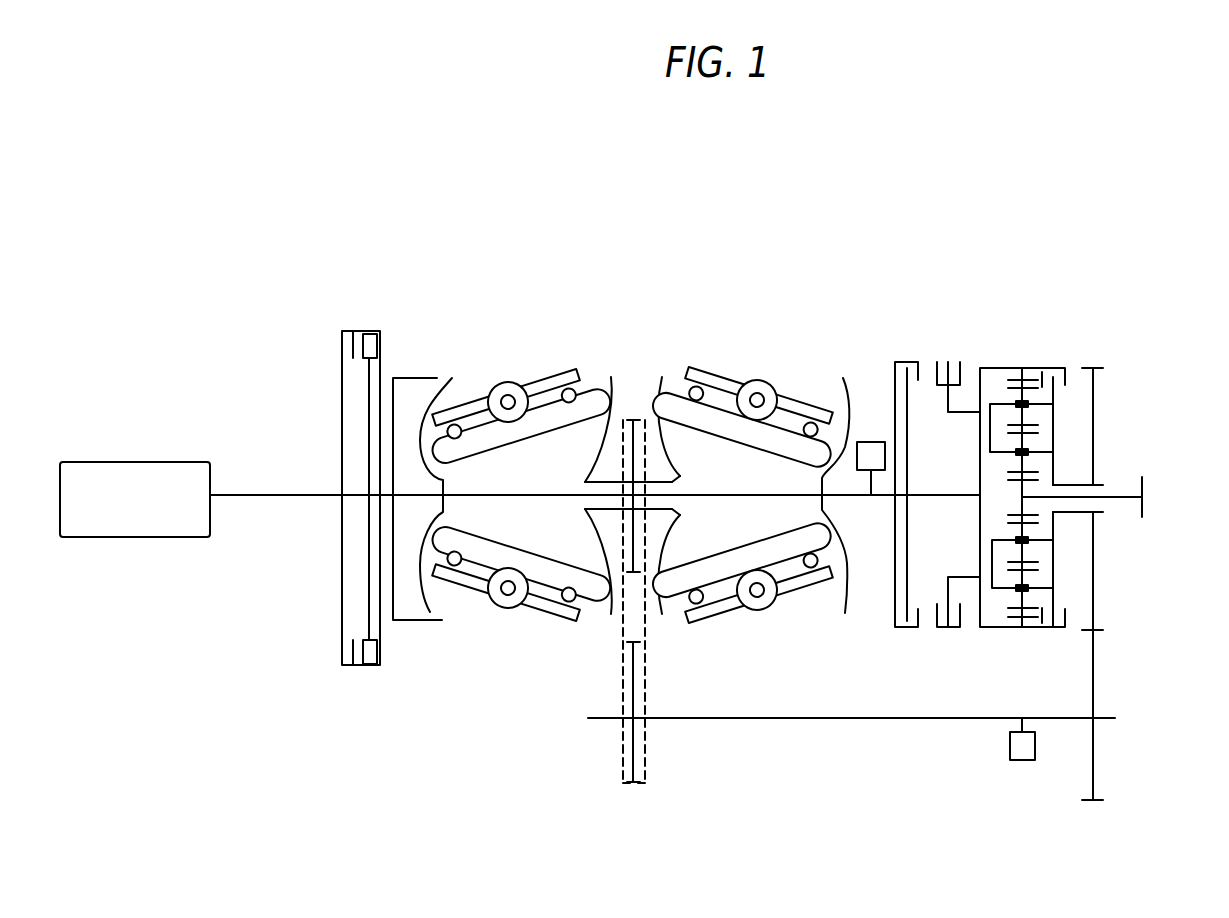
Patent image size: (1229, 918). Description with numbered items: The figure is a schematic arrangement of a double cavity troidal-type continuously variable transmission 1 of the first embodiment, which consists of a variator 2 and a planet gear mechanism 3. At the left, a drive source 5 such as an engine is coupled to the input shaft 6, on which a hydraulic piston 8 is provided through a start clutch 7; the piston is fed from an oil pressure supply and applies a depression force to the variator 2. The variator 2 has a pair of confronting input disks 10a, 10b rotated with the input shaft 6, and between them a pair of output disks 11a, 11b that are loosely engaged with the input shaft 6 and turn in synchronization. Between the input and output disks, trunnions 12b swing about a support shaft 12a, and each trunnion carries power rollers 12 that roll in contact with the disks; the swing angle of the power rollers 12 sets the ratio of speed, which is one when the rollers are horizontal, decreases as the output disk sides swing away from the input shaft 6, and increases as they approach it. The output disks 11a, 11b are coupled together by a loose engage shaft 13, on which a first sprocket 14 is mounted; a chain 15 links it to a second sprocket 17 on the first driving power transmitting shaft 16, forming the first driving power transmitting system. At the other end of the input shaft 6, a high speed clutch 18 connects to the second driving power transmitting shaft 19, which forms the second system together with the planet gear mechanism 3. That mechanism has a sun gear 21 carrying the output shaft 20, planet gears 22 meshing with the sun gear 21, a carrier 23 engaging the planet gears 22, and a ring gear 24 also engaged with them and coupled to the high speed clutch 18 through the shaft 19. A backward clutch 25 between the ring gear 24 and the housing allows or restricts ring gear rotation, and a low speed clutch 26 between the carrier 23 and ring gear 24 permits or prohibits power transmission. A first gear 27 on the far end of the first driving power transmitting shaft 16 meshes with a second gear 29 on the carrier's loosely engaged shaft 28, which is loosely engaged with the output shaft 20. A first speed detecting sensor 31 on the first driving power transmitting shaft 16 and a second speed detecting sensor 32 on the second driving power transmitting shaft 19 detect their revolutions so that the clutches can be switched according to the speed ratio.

The troidal-type continuously variable transmission 1 is at (690, 292).
The variator 2 is at (702, 372).
The planet gear mechanism 3 is at (1046, 350).
The drive source 5 is at (138, 538).
The input shaft 6 is at (268, 496).
The start clutch 7 is at (342, 583).
The hydraulic piston 8 is at (413, 620).
The input disk 10a is at (452, 378).
The input disk 10b is at (842, 580).
The output disk 11a is at (611, 377).
The output disk 11b is at (677, 512).
The power roller 12 is at (784, 412).
The support shaft 12a is at (508, 402).
The trunnion 12b is at (550, 377).
The loose engage shaft 13 is at (681, 478).
The first sprocket 14 is at (642, 422).
The chain 15 is at (645, 608).
The first driving power transmitting shaft 16 is at (967, 718).
The second sprocket 17 is at (645, 745).
The high speed clutch 18 is at (905, 360).
The second driving power transmitting shaft 19 is at (877, 498).
The output shaft 20 is at (1115, 498).
The sun gear 21 is at (1027, 508).
The planet gear 22 is at (1038, 555).
The carrier 23 is at (1052, 578).
The ring gear 24 is at (998, 627).
The backward clutch 25 is at (962, 366).
The low speed clutch 26 is at (1057, 367).
The first gear 27 is at (1093, 760).
The loosely engaged shaft 28 is at (1103, 483).
The second gear 29 is at (1093, 395).
The first speed detecting sensor 31 is at (1022, 760).
The second speed detecting sensor 32 is at (871, 442).